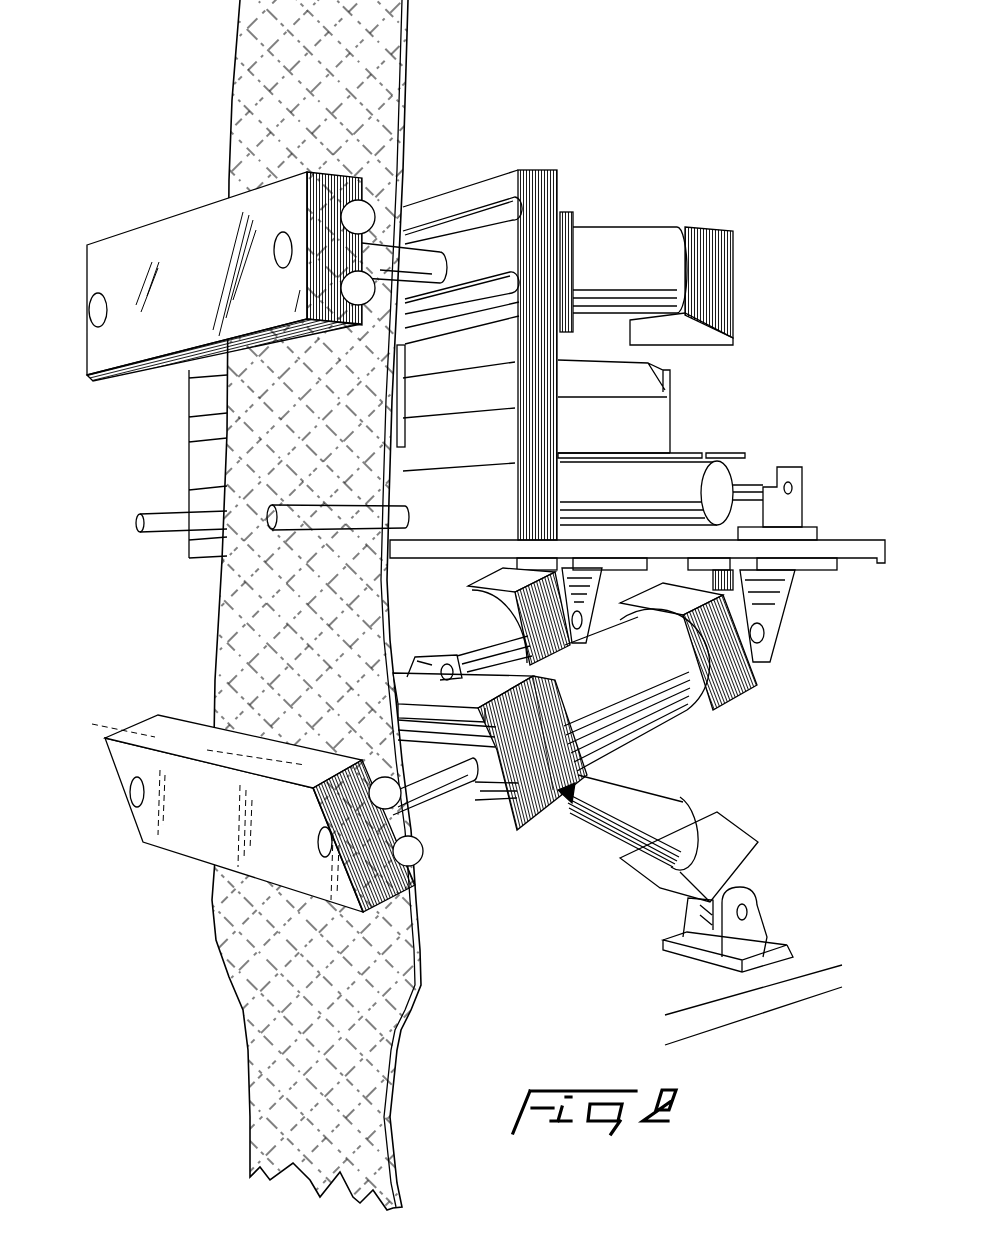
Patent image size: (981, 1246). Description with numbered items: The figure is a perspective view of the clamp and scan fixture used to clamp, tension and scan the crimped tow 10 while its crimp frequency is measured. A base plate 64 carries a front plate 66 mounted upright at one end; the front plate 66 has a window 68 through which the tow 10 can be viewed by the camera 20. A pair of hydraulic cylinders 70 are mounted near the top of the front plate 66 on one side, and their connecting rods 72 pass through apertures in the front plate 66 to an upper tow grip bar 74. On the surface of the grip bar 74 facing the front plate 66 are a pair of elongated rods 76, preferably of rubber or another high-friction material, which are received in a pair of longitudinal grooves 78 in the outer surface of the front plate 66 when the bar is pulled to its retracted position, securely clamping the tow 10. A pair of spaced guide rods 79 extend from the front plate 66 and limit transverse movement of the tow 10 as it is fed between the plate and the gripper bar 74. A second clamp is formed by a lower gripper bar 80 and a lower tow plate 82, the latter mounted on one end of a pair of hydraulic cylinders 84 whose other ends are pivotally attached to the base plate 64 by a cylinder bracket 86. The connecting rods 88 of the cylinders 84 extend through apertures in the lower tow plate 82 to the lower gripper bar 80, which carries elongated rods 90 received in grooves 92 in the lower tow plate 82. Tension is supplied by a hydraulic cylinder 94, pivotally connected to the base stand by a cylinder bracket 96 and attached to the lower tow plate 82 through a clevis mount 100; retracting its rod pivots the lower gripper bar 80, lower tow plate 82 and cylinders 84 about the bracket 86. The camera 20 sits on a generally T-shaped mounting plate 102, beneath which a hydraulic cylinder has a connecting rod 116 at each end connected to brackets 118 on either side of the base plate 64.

The tow 10 is at (237, 130).
The camera 20 is at (652, 392).
The base plate 64 is at (840, 543).
The front plate 66 is at (547, 283).
The window 68 is at (400, 388).
The hydraulic cylinders 70 is at (650, 237).
The connecting rods 72 is at (513, 213).
The upper tow grip bar 74 is at (95, 248).
The elongated rods 76 is at (360, 280).
The longitudinal grooves 78 is at (507, 287).
The guide rods 79 is at (307, 508).
The lower gripper bar 80 is at (168, 836).
The lower tow plate 82 is at (543, 820).
The hydraulic cylinders 84 is at (650, 700).
The cylinder bracket 86 is at (777, 603).
The connecting rods 88 is at (437, 877).
The elongated rods 90 is at (400, 863).
The grooves 92 is at (478, 803).
The hydraulic cylinder 94 is at (663, 802).
The cylinder bracket 96 is at (753, 925).
The clevis mount 100 is at (446, 665).
The mounting plate 102 is at (703, 452).
The connecting rod 116 is at (740, 482).
The brackets 118 is at (793, 510).